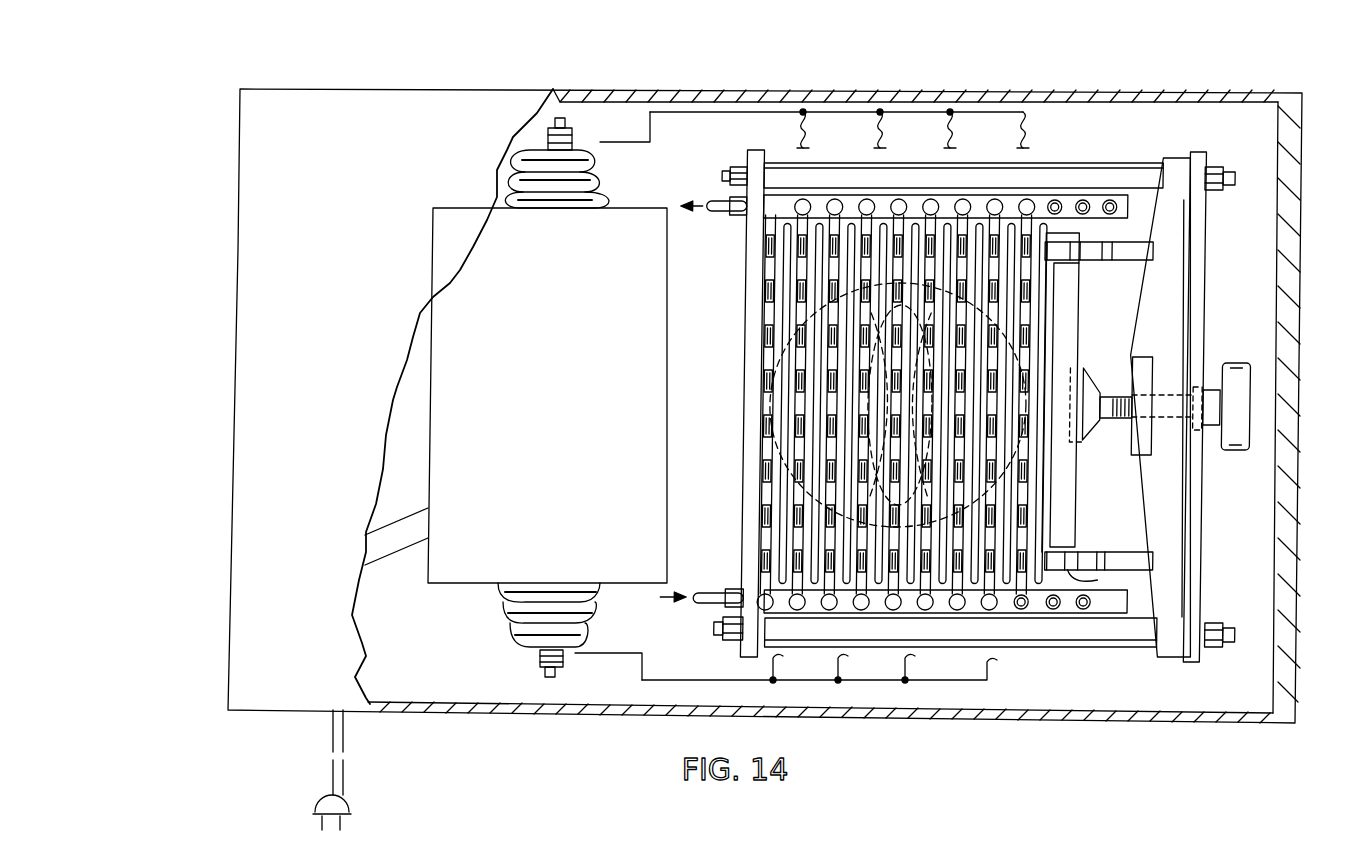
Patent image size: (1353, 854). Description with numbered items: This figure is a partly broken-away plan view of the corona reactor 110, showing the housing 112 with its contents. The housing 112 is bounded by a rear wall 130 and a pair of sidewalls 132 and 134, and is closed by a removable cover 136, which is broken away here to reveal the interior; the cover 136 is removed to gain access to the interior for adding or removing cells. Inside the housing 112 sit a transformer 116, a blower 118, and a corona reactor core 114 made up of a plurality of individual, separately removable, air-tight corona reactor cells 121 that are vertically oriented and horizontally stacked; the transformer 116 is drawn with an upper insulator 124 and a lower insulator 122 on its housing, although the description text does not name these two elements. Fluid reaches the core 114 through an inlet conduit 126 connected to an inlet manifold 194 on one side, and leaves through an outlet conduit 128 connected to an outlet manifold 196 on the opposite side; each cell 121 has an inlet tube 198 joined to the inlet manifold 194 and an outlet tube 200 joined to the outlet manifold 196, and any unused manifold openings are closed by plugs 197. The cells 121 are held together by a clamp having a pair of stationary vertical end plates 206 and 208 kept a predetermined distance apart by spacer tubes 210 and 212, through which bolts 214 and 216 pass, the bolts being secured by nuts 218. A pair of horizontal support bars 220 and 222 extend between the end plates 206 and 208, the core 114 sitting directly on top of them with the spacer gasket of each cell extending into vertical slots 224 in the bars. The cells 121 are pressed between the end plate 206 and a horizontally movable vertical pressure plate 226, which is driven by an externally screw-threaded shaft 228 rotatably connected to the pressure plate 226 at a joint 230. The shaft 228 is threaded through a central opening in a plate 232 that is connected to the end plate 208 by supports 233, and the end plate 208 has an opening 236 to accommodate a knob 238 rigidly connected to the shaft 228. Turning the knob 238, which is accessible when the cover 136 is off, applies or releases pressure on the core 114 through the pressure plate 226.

The corona reactor 110 is at (210, 307).
The housing 112 is at (242, 212).
The corona reactor core 114 is at (1072, 153).
The transformer 116 is at (516, 395).
The blower 118 is at (785, 493).
The corona reactor cells 121 is at (854, 210).
The lower insulator 122 is at (641, 653).
The upper insulator 124 is at (636, 143).
The inlet conduit 126 is at (698, 601).
The outlet conduit 128 is at (710, 212).
The rear wall 130 is at (1300, 385).
The sidewall 132 is at (1062, 722).
The sidewall 134 is at (1010, 94).
The cover 136 is at (446, 396).
The inlet manifold 194 is at (778, 594).
The outlet manifold 196 is at (767, 207).
The plugs 197 is at (1084, 609).
The inlet tube 198 is at (948, 596).
The outlet tube 200 is at (950, 212).
The end plate 206 is at (744, 400).
The end plate 208 is at (1203, 590).
The spacer tube 210 is at (1120, 647).
The spacer tube 212 is at (1132, 170).
The bolt 214 is at (717, 630).
The bolt 216 is at (719, 175).
The nuts 218 is at (734, 166).
The horizontal support bar 220 is at (1119, 553).
The horizontal support bar 222 is at (1123, 252).
The vertical slots 224 is at (1100, 580).
The pressure plate 226 is at (1077, 340).
The screw-threaded shaft 228 is at (1106, 397).
The joint 230 is at (1085, 441).
The plate 232 is at (1132, 445).
The support 233 is at (1142, 302).
The opening 236 is at (1198, 385).
The knob 238 is at (1236, 451).